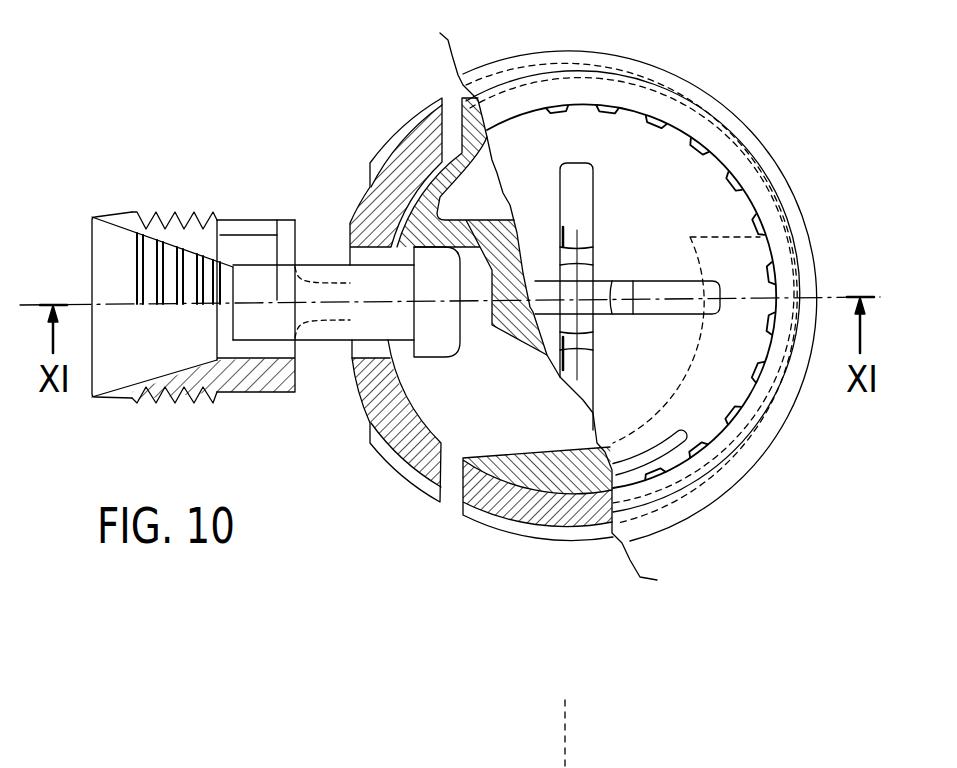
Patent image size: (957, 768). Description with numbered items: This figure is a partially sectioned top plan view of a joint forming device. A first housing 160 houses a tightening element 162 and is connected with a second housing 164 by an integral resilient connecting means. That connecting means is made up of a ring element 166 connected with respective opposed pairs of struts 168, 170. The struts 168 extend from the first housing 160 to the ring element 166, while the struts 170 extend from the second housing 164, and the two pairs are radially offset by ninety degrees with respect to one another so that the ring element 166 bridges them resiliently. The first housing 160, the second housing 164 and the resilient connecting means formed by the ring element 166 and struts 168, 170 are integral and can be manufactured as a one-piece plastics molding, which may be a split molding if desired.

The first housing 160 is at (717, 88).
The tightening element 162 is at (568, 413).
The second housing 164 is at (175, 212).
The ring element 166 is at (287, 230).
The struts 168 is at (327, 313).
The struts 170 is at (245, 220).